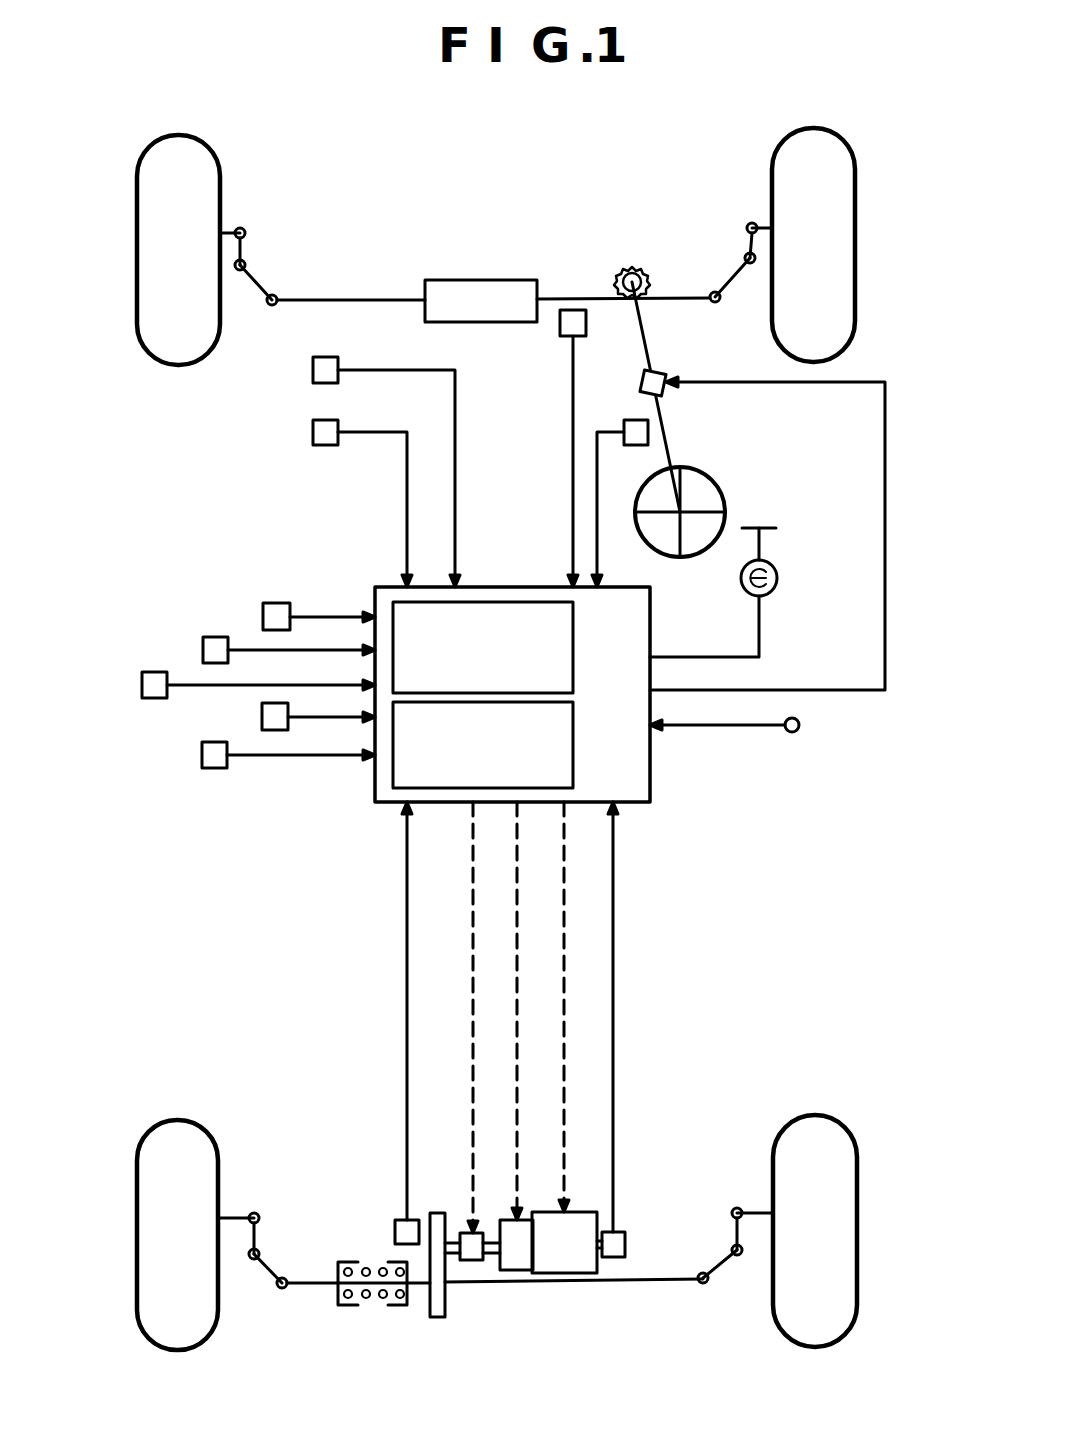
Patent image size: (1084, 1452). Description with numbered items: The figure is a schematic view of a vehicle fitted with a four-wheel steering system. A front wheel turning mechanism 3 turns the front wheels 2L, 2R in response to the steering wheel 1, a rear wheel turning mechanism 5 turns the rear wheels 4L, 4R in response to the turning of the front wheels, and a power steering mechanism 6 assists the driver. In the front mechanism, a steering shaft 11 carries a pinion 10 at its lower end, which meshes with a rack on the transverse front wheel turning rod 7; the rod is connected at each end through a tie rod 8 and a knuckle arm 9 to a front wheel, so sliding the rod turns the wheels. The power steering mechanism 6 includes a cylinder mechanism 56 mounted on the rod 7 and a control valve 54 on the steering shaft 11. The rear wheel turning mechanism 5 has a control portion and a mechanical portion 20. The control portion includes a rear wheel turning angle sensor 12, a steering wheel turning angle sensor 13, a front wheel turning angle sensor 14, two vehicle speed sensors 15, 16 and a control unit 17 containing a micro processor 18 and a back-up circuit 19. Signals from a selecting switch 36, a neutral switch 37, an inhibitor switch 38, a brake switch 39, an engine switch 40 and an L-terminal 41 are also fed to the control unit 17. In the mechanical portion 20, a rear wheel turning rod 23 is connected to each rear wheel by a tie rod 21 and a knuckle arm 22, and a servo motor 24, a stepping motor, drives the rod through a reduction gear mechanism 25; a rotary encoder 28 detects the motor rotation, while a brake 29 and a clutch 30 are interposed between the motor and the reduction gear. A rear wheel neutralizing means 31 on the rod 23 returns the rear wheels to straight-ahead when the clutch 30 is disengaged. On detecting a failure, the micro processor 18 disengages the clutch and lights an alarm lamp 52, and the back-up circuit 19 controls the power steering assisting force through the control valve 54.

The steering wheel 1 is at (718, 480).
The front wheel 2L is at (221, 166).
The front wheel 2R is at (856, 232).
The front wheel turning mechanism 3 is at (661, 250).
The rear wheel 4L is at (219, 1128).
The rear wheel 4R is at (855, 1128).
The rear wheel turning mechanism 5 is at (682, 898).
The power steering mechanism 6 is at (516, 266).
The front wheel turning rod 7 is at (368, 298).
The tie rod 8 is at (262, 276).
The knuckle arm 9 is at (244, 234).
The pinion 10 is at (632, 270).
The steering shaft 11 is at (672, 450).
The rear wheel turning angle sensor 12 is at (398, 1222).
The steering wheel turning angle sensor 13 is at (630, 420).
The front wheel turning angle sensor 14 is at (558, 330).
The vehicle speed sensor 15 is at (312, 367).
The vehicle speed sensor 16 is at (312, 433).
The control unit 17 is at (652, 778).
The micro processor 18 is at (574, 642).
The back-up circuit 19 is at (574, 742).
The mechanical portion 20 is at (699, 1086).
The tie rod 21 is at (270, 1296).
The knuckle arm 22 is at (258, 1240).
The rear wheel turning rod 23 is at (646, 1283).
The servo motor 24 is at (586, 1212).
The reduction gear mechanism 25 is at (432, 1312).
The rotary encoder 28 is at (622, 1234).
The brake 29 is at (518, 1272).
The clutch 30 is at (484, 1262).
The rear wheel neutralizing means 31 is at (369, 1314).
The selecting switch 36 is at (276, 603).
The neutral switch 37 is at (228, 638).
The inhibitor switch 38 is at (155, 672).
The brake switch 39 is at (262, 720).
The engine switch 40 is at (215, 768).
The L-terminal 41 is at (800, 732).
The alarm lamp 52 is at (778, 580).
The control valve 54 is at (670, 375).
The cylinder mechanism 56 is at (458, 280).